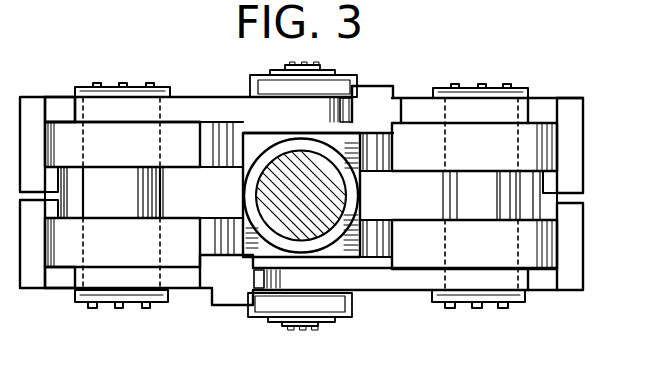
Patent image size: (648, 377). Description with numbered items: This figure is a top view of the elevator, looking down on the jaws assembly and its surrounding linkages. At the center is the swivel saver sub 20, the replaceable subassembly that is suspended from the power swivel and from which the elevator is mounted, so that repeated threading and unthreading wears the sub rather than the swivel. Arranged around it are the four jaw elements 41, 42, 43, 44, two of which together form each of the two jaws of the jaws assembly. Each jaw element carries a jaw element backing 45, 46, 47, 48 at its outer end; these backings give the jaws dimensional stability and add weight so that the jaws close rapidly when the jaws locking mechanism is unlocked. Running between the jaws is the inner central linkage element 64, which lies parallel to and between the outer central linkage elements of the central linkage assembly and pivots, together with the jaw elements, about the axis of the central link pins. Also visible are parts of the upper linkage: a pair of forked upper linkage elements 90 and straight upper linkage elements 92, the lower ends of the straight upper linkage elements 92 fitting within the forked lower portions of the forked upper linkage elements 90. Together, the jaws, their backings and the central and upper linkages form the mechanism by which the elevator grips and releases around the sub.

The swivel saver sub 20 is at (318, 206).
The jaw element 41 is at (130, 250).
The jaw element 42 is at (480, 250).
The jaw element 43 is at (113, 137).
The jaw element 44 is at (538, 147).
The jaw element backing 45 is at (30, 284).
The jaw element backing 46 is at (568, 260).
The jaw element backing 47 is at (32, 101).
The jaw element backing 48 is at (574, 116).
The inner central linkage element 64 is at (413, 187).
The forked upper linkage element 90 is at (368, 96).
The straight upper linkage element 92 is at (201, 106).